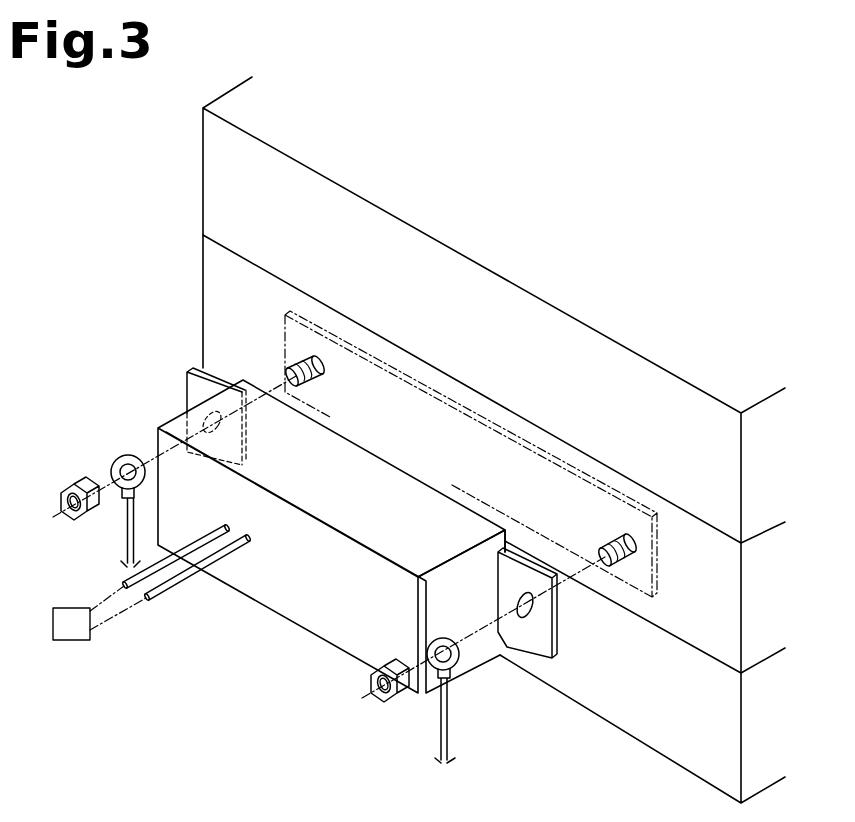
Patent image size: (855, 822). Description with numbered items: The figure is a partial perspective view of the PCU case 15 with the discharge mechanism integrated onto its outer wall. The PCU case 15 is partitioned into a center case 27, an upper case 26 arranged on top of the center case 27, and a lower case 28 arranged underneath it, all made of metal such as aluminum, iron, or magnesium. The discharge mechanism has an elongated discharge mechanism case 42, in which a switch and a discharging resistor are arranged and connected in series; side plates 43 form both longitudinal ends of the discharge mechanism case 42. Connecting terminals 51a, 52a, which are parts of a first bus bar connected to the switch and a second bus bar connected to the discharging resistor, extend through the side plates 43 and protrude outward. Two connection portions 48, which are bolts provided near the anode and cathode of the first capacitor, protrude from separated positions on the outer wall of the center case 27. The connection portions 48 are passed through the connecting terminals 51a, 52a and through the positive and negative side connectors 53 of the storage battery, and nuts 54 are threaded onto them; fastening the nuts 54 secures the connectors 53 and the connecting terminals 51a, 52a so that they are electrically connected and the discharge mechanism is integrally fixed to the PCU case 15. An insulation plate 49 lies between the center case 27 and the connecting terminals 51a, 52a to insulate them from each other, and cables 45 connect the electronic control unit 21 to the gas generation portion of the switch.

The PCU case 15 is at (445, 440).
The upper case 26 is at (203, 222).
The center case 27 is at (203, 286).
The lower case 28 is at (470, 566).
The discharge mechanism case 42 is at (388, 476).
The side plates 43 is at (506, 535).
The cables 45 is at (224, 527).
The connection portion (bolt) 48 is at (317, 374).
The insulation plate 49 is at (450, 396).
The connecting terminal 51a is at (189, 382).
The connecting terminal 52a is at (540, 642).
The connector 53 is at (114, 461).
The nuts 54 is at (82, 523).
The electronic control unit 21 is at (99, 613).